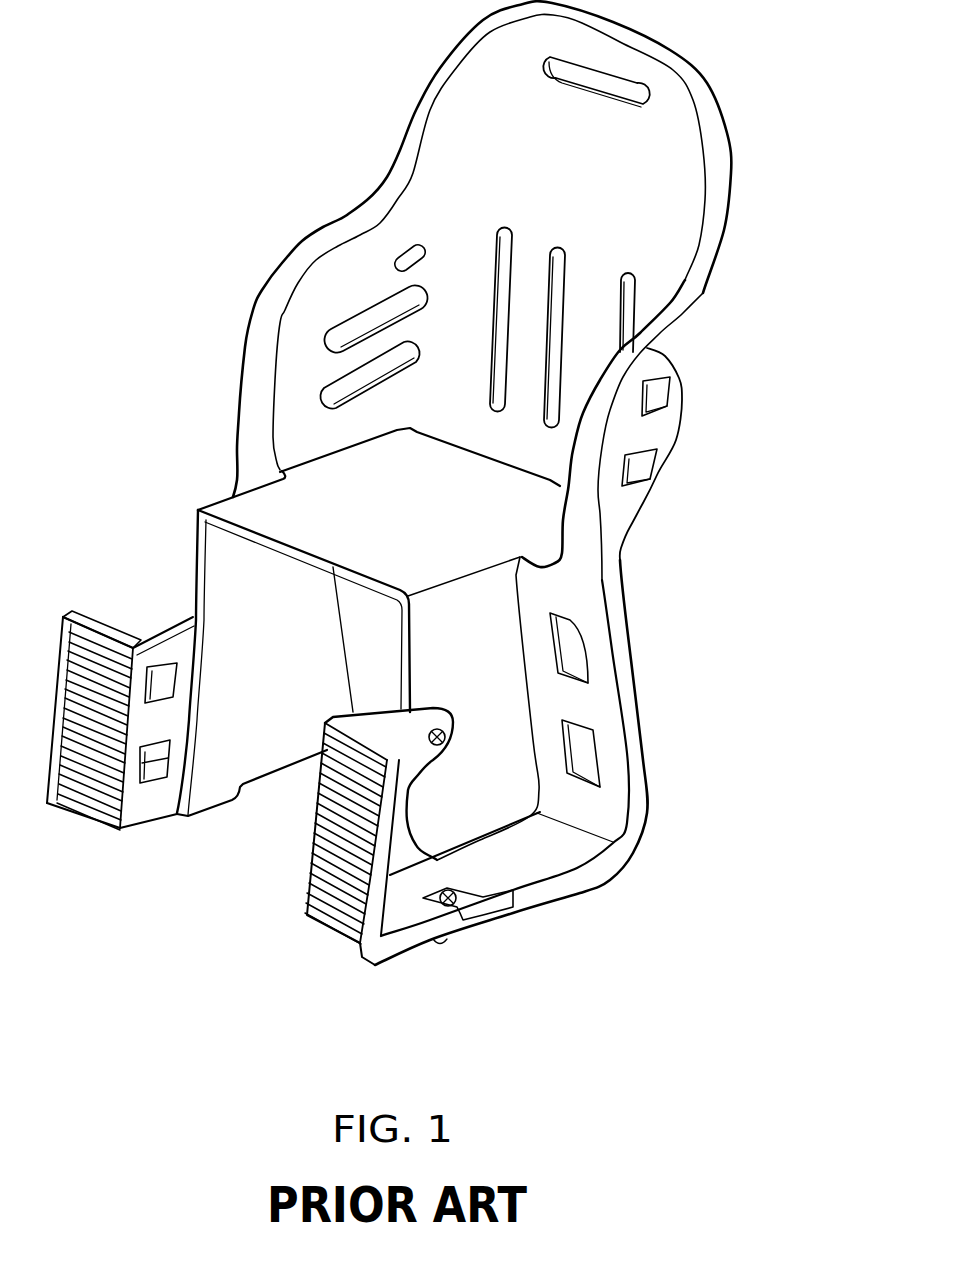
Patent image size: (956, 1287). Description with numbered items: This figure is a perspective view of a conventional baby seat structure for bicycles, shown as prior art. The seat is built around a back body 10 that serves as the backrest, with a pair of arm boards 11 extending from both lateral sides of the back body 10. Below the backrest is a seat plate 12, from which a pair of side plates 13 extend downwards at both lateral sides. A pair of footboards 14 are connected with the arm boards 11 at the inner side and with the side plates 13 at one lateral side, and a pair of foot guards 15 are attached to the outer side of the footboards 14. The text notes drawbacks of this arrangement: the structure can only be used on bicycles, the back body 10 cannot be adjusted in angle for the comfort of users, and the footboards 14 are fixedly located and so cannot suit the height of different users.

The back body 10 is at (755, 205).
The arm boards 11 is at (292, 266).
The seat plate 12 is at (360, 467).
The side plates 13 is at (190, 563).
The footboards 14 is at (540, 858).
The foot guards 15 is at (143, 803).